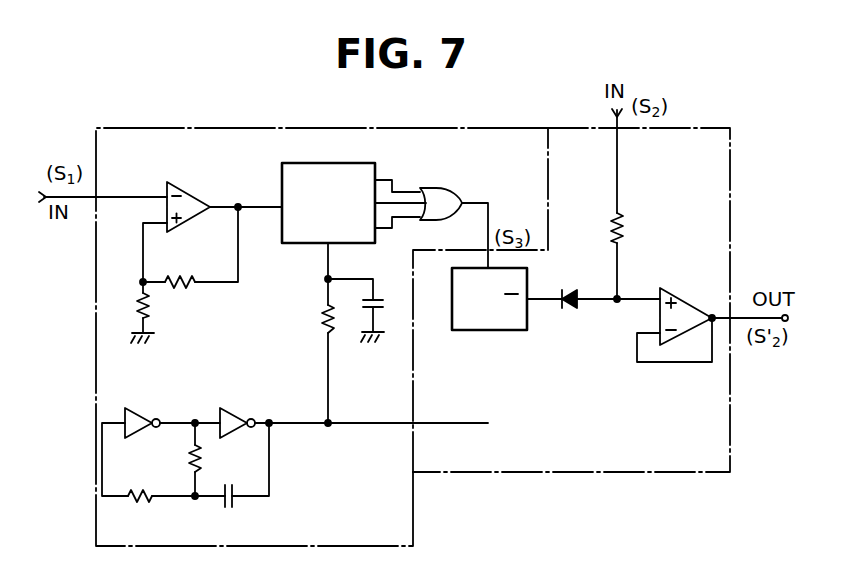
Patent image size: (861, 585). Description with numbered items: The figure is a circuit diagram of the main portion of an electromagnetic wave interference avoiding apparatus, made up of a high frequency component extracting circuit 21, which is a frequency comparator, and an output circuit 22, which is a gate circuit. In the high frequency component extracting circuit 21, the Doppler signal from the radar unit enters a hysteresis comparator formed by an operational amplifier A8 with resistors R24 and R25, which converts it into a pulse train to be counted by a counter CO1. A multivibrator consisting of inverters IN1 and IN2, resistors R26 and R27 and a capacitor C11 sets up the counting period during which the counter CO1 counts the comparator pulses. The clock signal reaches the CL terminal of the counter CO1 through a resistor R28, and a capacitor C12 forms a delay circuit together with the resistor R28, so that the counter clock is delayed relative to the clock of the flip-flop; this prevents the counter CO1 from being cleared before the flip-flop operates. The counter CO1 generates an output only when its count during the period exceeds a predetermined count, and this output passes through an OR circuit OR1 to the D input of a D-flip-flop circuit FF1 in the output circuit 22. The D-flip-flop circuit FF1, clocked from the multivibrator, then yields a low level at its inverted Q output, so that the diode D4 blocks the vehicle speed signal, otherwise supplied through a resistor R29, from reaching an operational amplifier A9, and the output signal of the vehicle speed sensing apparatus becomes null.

The high frequency component extracting circuit 21 is at (96, 338).
The output circuit 22 is at (731, 208).
The operational amplifier A8 is at (193, 211).
The operational amplifier A9 is at (686, 323).
The resistor R24 is at (165, 307).
The resistor R25 is at (174, 268).
The resistor R26 is at (140, 509).
The resistor R27 is at (215, 459).
The resistor R28 is at (306, 319).
The resistor R29 is at (637, 228).
The capacitor C11 is at (233, 511).
The capacitor C12 is at (389, 291).
The counter CO1 is at (328, 191).
The OR circuit OR1 is at (443, 192).
The D-flip-flop circuit FF1 is at (492, 313).
The diode D4 is at (568, 284).
The inverter IN1 is at (140, 410).
The inverter IN2 is at (236, 410).